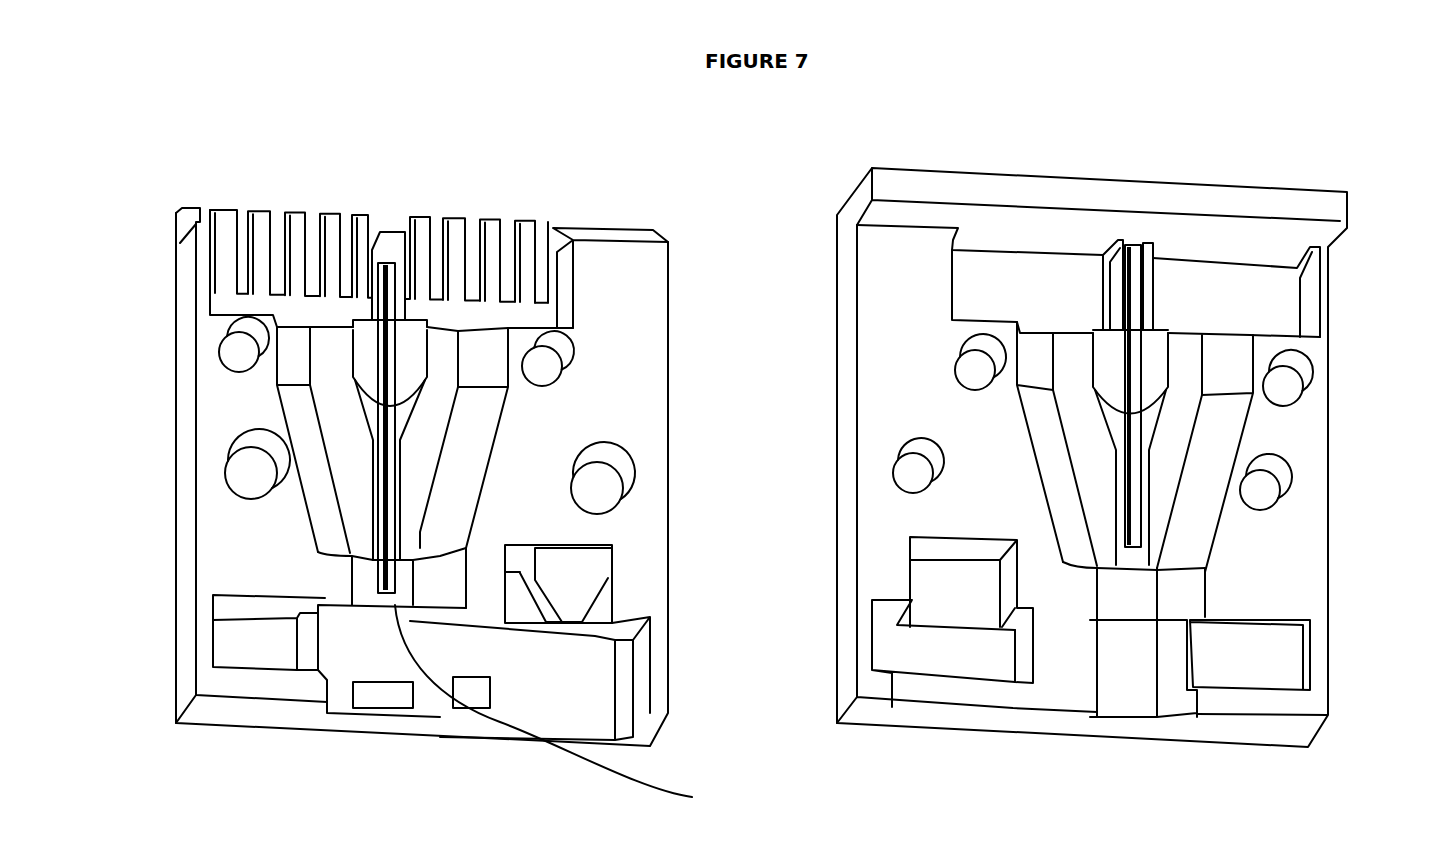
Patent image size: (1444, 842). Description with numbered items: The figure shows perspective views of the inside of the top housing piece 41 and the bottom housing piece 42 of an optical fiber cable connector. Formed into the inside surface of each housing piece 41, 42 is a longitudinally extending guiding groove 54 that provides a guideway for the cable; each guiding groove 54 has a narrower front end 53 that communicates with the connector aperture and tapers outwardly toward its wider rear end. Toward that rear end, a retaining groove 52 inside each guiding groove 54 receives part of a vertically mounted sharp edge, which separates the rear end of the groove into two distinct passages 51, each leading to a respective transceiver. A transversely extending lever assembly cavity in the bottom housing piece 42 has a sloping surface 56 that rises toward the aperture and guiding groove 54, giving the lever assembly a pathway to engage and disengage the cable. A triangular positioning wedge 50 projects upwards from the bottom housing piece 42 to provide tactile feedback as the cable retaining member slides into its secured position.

The top housing piece 41 is at (818, 155).
The bottom housing piece 42 is at (178, 155).
The positioning wedge 50 is at (580, 578).
The passages 51 is at (1093, 473).
The retaining groove 52 is at (385, 263).
The front end of guiding groove 53 is at (1123, 673).
The guiding groove 54 is at (313, 517).
The sloping surface 56 is at (576, 699).